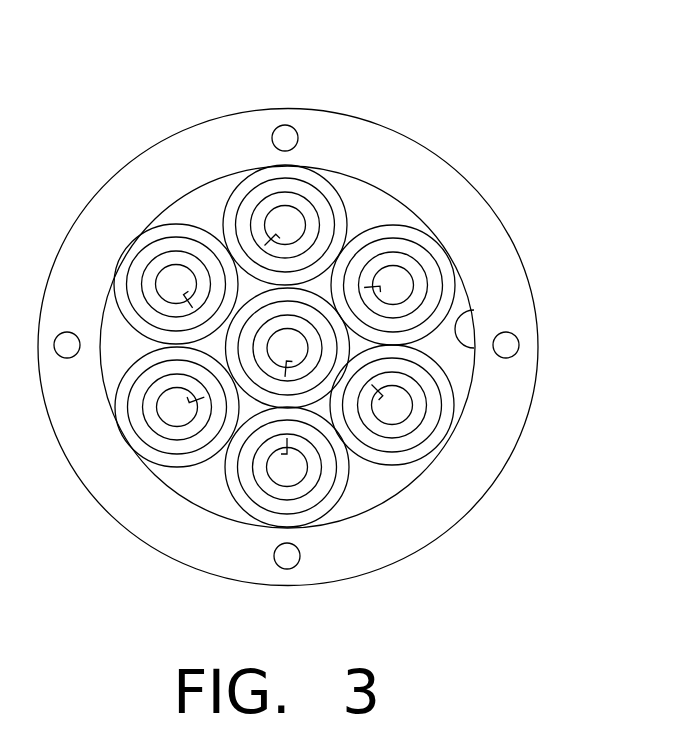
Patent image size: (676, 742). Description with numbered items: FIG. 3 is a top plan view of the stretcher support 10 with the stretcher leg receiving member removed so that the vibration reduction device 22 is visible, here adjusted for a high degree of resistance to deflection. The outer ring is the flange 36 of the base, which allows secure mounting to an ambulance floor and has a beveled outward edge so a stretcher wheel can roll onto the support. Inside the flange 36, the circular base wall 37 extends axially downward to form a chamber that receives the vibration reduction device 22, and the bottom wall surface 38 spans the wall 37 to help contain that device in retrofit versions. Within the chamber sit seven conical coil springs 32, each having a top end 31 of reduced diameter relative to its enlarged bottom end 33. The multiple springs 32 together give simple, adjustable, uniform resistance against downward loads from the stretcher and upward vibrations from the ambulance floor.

The assembly 10 is at (483, 147).
The vibration reduction device 22 is at (353, 488).
The top ends 31 is at (268, 240).
The conical coil springs 32 is at (175, 443).
The bottom ends 33 is at (123, 320).
The flange 36 is at (383, 140).
The base wall 37 is at (469, 312).
The bottom wall surface 38 is at (355, 197).